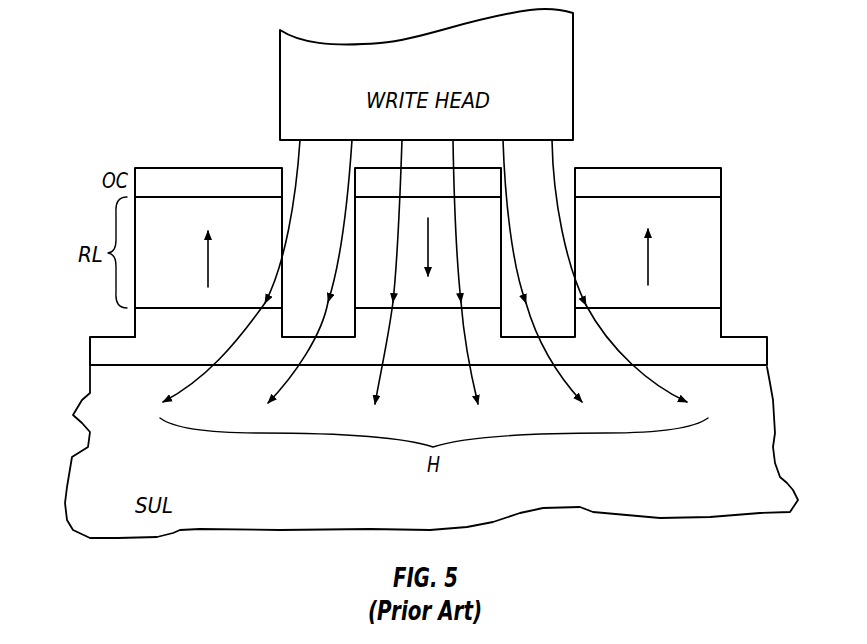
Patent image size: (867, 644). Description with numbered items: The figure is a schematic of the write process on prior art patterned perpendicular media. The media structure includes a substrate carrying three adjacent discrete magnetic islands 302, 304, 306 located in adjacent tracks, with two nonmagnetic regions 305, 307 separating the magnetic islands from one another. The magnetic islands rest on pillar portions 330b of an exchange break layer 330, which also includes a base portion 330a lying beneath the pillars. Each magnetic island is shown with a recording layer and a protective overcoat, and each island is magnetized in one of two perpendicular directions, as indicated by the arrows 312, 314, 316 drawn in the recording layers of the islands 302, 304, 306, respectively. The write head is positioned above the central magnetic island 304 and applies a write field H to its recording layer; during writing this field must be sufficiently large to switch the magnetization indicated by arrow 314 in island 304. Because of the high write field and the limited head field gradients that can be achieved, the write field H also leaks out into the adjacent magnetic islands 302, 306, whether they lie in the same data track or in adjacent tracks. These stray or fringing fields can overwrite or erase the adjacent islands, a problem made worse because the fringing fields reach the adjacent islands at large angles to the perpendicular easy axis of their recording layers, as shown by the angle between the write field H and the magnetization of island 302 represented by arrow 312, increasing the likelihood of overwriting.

The magnetic island 302 is at (207, 168).
The magnetic island 304 is at (492, 168).
The magnetic island 306 is at (687, 167).
The nonmagnetic region 305 is at (290, 182).
The nonmagnetic region 307 is at (562, 167).
The magnetization arrow 312 is at (208, 268).
The magnetization arrow 314 is at (428, 265).
The magnetization arrow 316 is at (648, 261).
The exchange break layer 330 is at (83, 365).
The base portion 330a is at (688, 353).
The pillar portions 330b is at (712, 322).